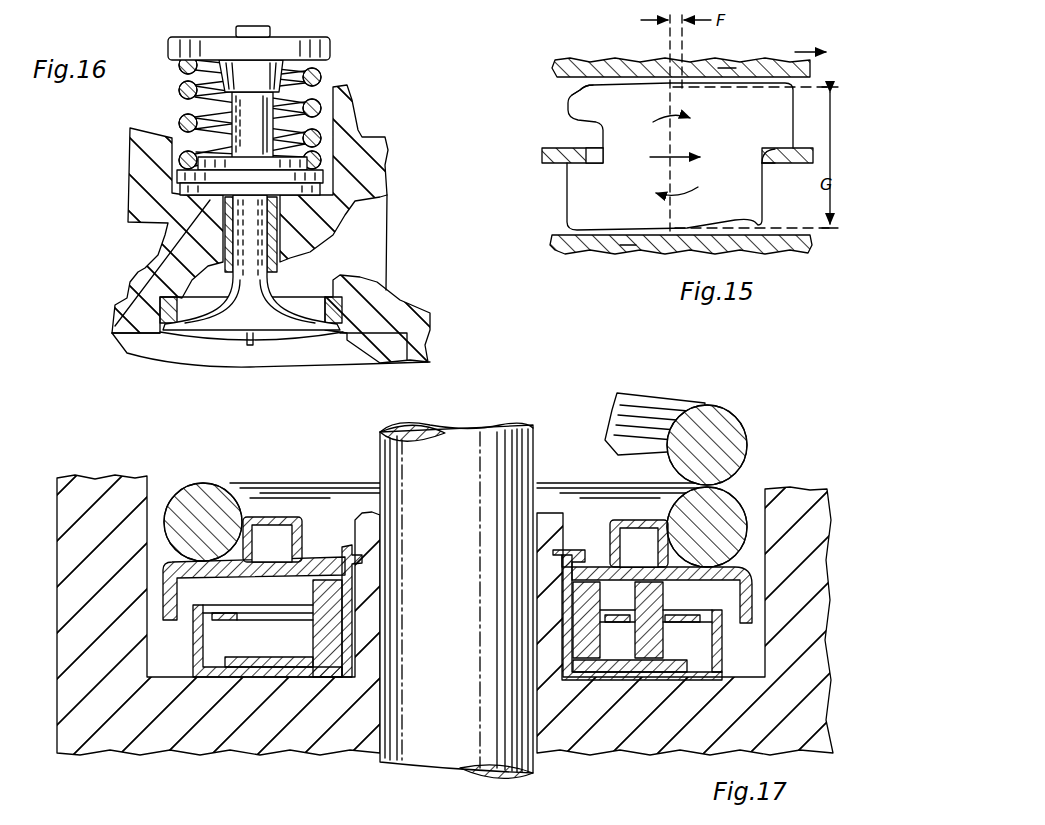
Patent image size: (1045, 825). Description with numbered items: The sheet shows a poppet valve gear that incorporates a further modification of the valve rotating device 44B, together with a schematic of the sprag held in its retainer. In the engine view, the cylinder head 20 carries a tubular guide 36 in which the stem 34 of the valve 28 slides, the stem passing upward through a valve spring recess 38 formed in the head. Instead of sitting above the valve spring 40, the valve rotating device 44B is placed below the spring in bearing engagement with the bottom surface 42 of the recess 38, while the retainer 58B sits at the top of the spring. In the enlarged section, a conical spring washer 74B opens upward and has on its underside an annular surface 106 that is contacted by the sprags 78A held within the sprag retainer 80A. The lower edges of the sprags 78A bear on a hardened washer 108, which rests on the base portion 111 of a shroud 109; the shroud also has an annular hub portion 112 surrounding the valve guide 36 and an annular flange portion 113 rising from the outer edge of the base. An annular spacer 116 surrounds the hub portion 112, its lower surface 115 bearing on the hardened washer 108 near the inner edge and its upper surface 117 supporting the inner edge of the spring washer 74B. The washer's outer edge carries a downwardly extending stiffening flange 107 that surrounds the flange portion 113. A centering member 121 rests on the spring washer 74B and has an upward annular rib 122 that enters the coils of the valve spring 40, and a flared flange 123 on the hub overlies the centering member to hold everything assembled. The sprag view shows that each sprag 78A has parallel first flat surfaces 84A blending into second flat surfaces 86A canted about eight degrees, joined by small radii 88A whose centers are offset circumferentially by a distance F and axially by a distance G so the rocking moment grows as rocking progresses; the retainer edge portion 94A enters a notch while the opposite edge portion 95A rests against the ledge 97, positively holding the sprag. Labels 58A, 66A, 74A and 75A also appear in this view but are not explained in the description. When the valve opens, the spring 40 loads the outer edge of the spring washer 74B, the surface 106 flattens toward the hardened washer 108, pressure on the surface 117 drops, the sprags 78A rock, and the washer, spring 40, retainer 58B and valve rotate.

In FIG. 16, the cylinder head 20 is at (127, 286).
In FIG. 17, the cylinder head 20 is at (797, 720).
In FIG. 16, the valve 28 is at (180, 343).
In FIG. 16, the valve stem 34 is at (266, 128).
In FIG. 17, the valve stem 34 is at (398, 468).
In FIG. 16, the tubular guide 36 is at (282, 264).
In FIG. 17, the tubular guide 36 is at (360, 748).
In FIG. 16, the valve spring recess 38 is at (338, 112).
In FIG. 17, the valve spring recess 38 is at (148, 478).
In FIG. 16, the valve spring 40 is at (322, 73).
In FIG. 17, the valve spring 40 is at (205, 498).
In FIG. 16, the bottom surface of the recess 42 is at (172, 176).
In FIG. 17, the bottom surface of the recess 42 is at (157, 677).
In FIG. 16, the valve rotating device 44B is at (330, 176).
In FIG. 17, the valve rotating device 44B is at (158, 567).
In FIG. 16, the retainer 58B is at (330, 47).
In FIG. 17, the retainer 58B is at (467, 445).
In FIG. 15, the upper plate 58A is at (763, 68).
In FIG. 15, the upper surface 66A is at (570, 86).
In FIG. 15, the lower plate 74A is at (587, 247).
In FIG. 17, the conical spring washer 74B is at (700, 545).
In FIG. 15, the lower surface 75A is at (807, 237).
In FIG. 15, the sprag 78A is at (565, 193).
In FIG. 17, the sprag 78A is at (657, 637).
In FIG. 15, the sprag retainer 80A is at (542, 146).
In FIG. 17, the sprag retainer 80A is at (700, 620).
In FIG. 15, the first flat surfaces 84A is at (720, 68).
In FIG. 15, the second flat surfaces 86A is at (595, 92).
In FIG. 15, the small radii 88A is at (684, 86).
In FIG. 15, the edge portion of the retainer 94A is at (590, 150).
In FIG. 15, the opposite edge portion 95A is at (773, 167).
In FIG. 15, the ledge 97 is at (770, 157).
In FIG. 17, the annular surface 106 is at (745, 580).
In FIG. 17, the stiffening flange 107 is at (745, 603).
In FIG. 17, the hardened washer 108 is at (637, 672).
In FIG. 17, the shroud 109 is at (700, 682).
In FIG. 17, the base portion 111 is at (248, 674).
In FIG. 17, the annular hub portion 112 is at (345, 612).
In FIG. 17, the annular flange portion 113 is at (193, 645).
In FIG. 17, the lower surface 115 is at (587, 668).
In FIG. 17, the annular spacer 116 is at (585, 617).
In FIG. 17, the upper surface 117 is at (345, 574).
In FIG. 17, the centering member 121 is at (598, 567).
In FIG. 17, the annular rib 122 is at (637, 523).
In FIG. 17, the flared flange 123 is at (563, 555).